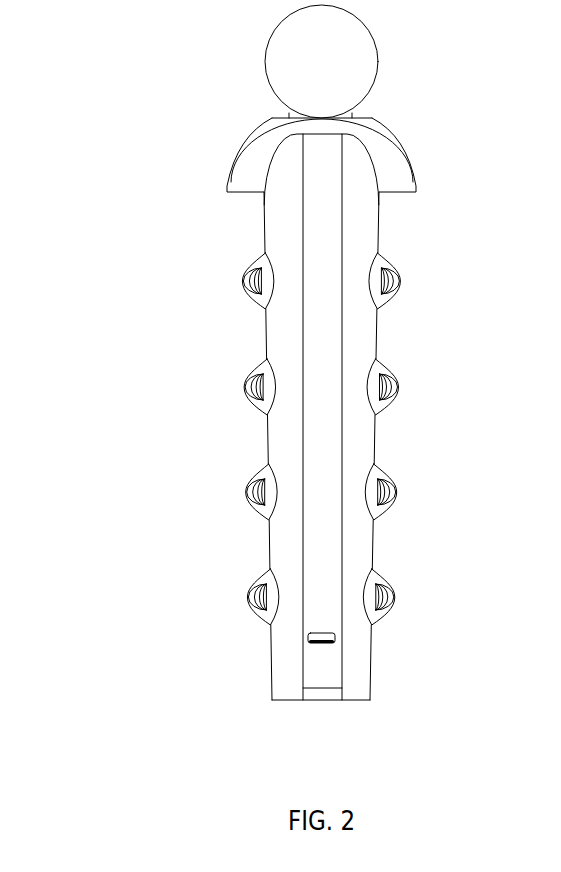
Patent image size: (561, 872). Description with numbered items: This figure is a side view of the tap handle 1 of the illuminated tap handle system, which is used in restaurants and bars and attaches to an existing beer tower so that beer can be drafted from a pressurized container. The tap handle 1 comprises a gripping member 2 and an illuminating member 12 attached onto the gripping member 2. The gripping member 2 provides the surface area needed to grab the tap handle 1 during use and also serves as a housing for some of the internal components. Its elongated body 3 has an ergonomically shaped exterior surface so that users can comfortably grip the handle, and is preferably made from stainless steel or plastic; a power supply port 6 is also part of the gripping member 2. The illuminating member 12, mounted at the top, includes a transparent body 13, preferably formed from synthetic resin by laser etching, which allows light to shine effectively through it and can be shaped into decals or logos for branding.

The tap handle 1 is at (118, 293).
The gripping member 2 is at (423, 423).
The elongated body 3 is at (278, 436).
The power supply port 6 is at (335, 640).
The illuminating member 12 is at (403, 48).
The transparent body 13 is at (270, 54).